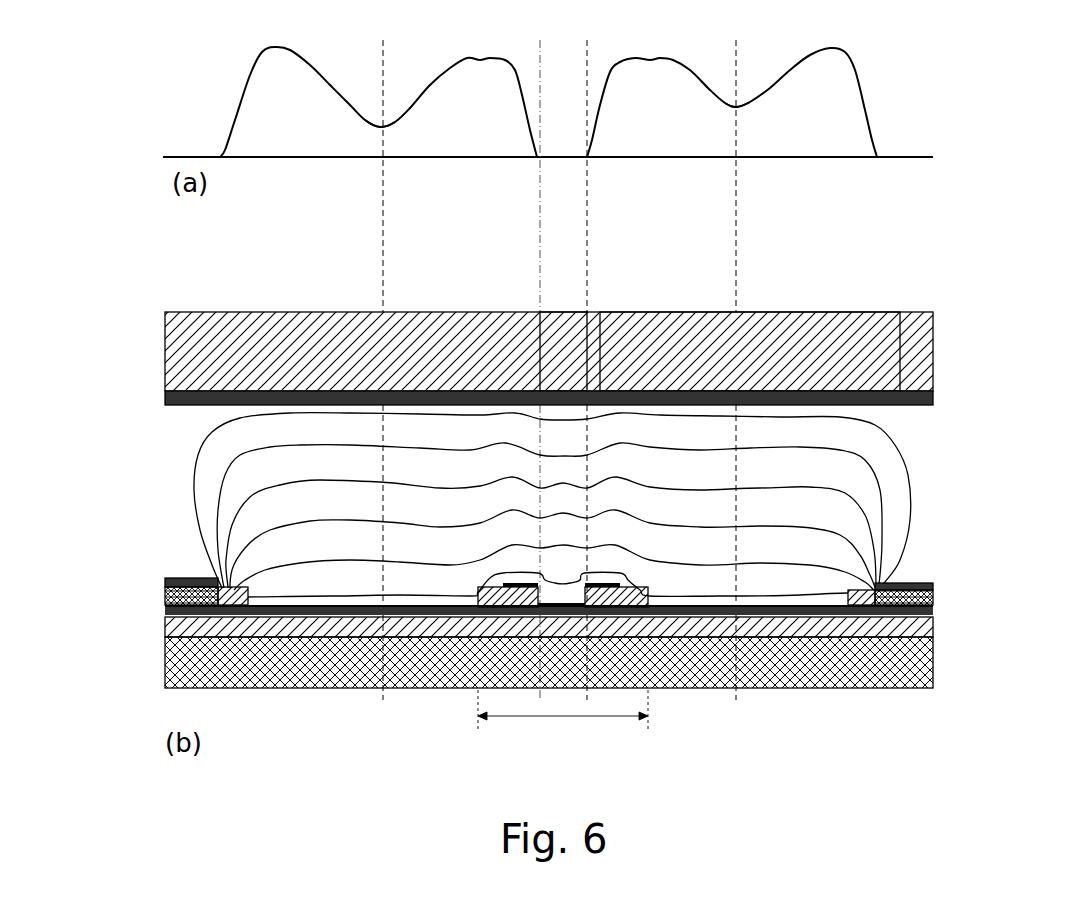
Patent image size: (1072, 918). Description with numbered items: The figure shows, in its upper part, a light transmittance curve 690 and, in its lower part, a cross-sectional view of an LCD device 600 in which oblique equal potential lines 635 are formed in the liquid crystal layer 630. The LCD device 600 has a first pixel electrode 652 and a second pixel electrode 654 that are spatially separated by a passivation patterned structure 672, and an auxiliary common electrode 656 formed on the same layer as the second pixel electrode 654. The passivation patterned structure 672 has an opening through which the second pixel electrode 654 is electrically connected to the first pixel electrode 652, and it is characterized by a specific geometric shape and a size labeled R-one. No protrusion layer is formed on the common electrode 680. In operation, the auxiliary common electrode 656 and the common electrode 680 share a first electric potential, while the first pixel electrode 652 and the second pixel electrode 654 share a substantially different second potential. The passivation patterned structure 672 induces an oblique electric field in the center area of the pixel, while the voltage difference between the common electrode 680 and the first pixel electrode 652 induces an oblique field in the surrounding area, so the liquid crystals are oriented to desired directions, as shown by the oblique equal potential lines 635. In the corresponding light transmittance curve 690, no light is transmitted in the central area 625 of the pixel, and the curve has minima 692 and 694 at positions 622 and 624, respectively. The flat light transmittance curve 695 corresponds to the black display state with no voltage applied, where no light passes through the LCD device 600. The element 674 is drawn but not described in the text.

The LCD device 600 is at (218, 282).
The position 622 is at (383, 312).
The position 624 is at (736, 312).
The central area 625 is at (563, 306).
The liquid crystal layer 630 is at (564, 505).
The oblique equal potential lines 635 is at (215, 478).
The first pixel electrode 652 is at (780, 617).
The second pixel electrode 654 is at (495, 586).
The auxiliary common electrode 656 is at (920, 583).
The passivation patterned structure 672 is at (640, 603).
The edge electrode 674 is at (235, 606).
The common electrode 680 is at (933, 399).
The light transmittance curve 690 is at (863, 110).
The minimum 692 is at (383, 127).
The minimum 694 is at (736, 107).
The light transmittance curve 695 is at (855, 160).